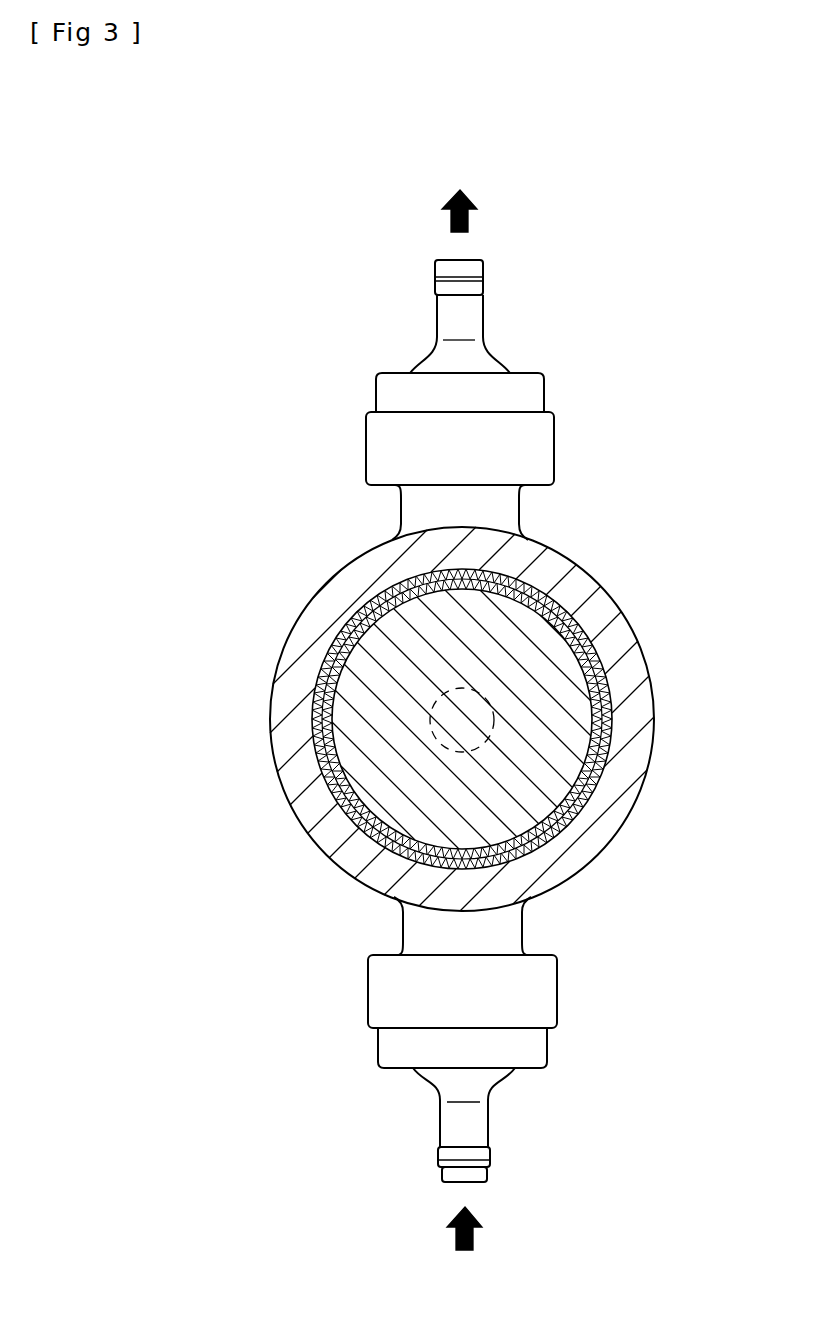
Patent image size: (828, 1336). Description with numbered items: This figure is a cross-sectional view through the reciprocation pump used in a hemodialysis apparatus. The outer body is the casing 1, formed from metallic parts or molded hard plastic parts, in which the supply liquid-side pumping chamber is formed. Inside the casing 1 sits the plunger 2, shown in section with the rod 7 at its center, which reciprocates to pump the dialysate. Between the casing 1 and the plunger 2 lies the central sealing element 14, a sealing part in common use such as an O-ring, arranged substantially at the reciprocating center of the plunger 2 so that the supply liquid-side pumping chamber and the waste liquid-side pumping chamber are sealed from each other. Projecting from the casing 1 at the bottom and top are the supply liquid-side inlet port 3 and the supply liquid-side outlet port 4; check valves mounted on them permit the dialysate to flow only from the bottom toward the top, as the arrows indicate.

The casing 1 is at (288, 633).
The plunger 2 is at (588, 644).
The supply liquid-side inlet port 3 is at (488, 1125).
The supply liquid-side outlet port 4 is at (485, 313).
The rod 7 is at (490, 735).
The central sealing element 14 is at (612, 680).